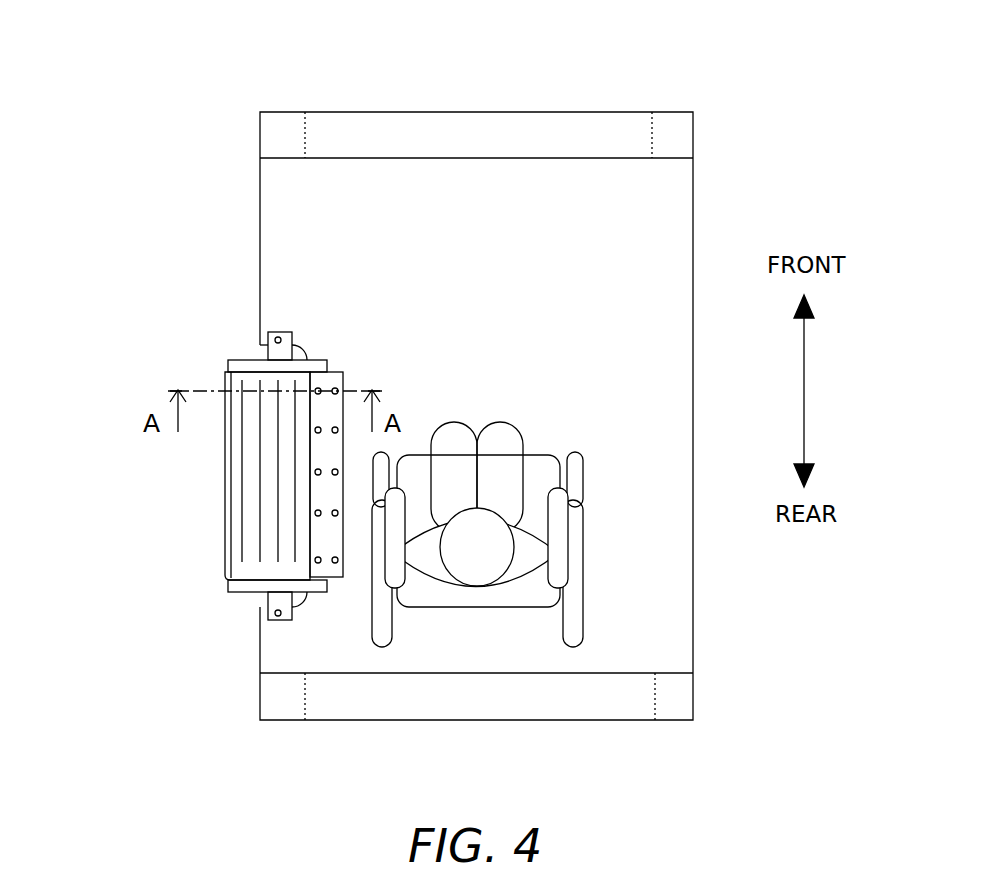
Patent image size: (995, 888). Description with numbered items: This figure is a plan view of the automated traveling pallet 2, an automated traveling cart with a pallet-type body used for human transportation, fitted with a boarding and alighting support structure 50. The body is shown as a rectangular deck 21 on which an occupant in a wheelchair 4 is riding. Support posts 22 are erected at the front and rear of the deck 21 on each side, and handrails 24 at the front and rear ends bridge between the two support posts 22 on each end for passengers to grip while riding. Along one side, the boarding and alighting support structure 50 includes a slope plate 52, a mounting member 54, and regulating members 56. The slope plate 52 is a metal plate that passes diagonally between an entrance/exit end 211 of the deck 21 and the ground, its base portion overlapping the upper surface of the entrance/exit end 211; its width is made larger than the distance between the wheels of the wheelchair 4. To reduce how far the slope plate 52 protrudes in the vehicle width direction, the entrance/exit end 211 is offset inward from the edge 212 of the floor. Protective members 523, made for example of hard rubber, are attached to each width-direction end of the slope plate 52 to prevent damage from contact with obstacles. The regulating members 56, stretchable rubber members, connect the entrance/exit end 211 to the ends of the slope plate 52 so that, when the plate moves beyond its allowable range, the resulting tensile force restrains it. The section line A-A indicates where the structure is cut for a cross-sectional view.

The automated traveling pallet 2 is at (476, 395).
The wheelchair 4 is at (495, 420).
The deck 21 is at (660, 375).
The support post 22 is at (308, 125).
The handrail 24 is at (575, 132).
The boarding and alighting support structure 50 is at (196, 492).
The slope plate 52 is at (240, 468).
The mounting member 54 is at (322, 525).
The regulating member 56 is at (270, 350).
The entrance/exit end 211 is at (328, 360).
The edge 212 is at (260, 262).
The protective member 523 is at (228, 362).